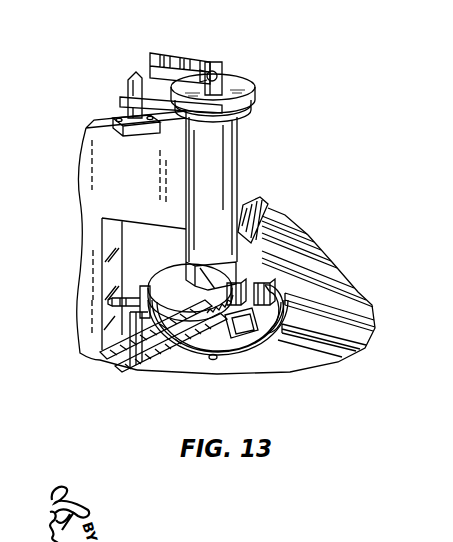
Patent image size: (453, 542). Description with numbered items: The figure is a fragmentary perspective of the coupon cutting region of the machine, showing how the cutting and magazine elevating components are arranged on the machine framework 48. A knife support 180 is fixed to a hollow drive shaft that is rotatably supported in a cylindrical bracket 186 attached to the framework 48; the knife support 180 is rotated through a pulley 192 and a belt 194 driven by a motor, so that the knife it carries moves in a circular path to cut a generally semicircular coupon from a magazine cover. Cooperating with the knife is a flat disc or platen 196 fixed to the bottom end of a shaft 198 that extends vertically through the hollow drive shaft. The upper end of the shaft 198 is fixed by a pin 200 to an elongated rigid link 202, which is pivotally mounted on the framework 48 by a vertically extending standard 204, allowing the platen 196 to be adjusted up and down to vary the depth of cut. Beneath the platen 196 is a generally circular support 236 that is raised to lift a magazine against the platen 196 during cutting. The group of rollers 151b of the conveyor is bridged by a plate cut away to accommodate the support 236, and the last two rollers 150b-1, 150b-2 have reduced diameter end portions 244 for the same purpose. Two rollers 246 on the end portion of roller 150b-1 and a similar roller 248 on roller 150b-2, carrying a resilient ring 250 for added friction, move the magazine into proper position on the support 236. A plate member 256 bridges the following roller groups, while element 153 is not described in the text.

The machine framework 48 is at (136, 177).
The group of rollers 151b is at (352, 242).
The guide rail 153 is at (340, 328).
The roller 150b-1 is at (375, 313).
The roller 150b-2 is at (370, 353).
The knife support 180 is at (220, 273).
The cylindrical bracket 186 is at (235, 160).
The pulley 192 is at (235, 82).
The belt 194 is at (133, 92).
The platen 196 is at (167, 283).
The shaft 198 is at (228, 82).
The pin 200 is at (232, 54).
The elongated rigid link 202 is at (185, 64).
The standard 204 is at (125, 110).
The circular support 236 is at (197, 337).
The reduced diameter end portion 244 is at (262, 290).
The rollers 246 is at (240, 284).
The roller 248 is at (235, 326).
The resilient ring 250 is at (262, 330).
The plate member 256 is at (322, 360).